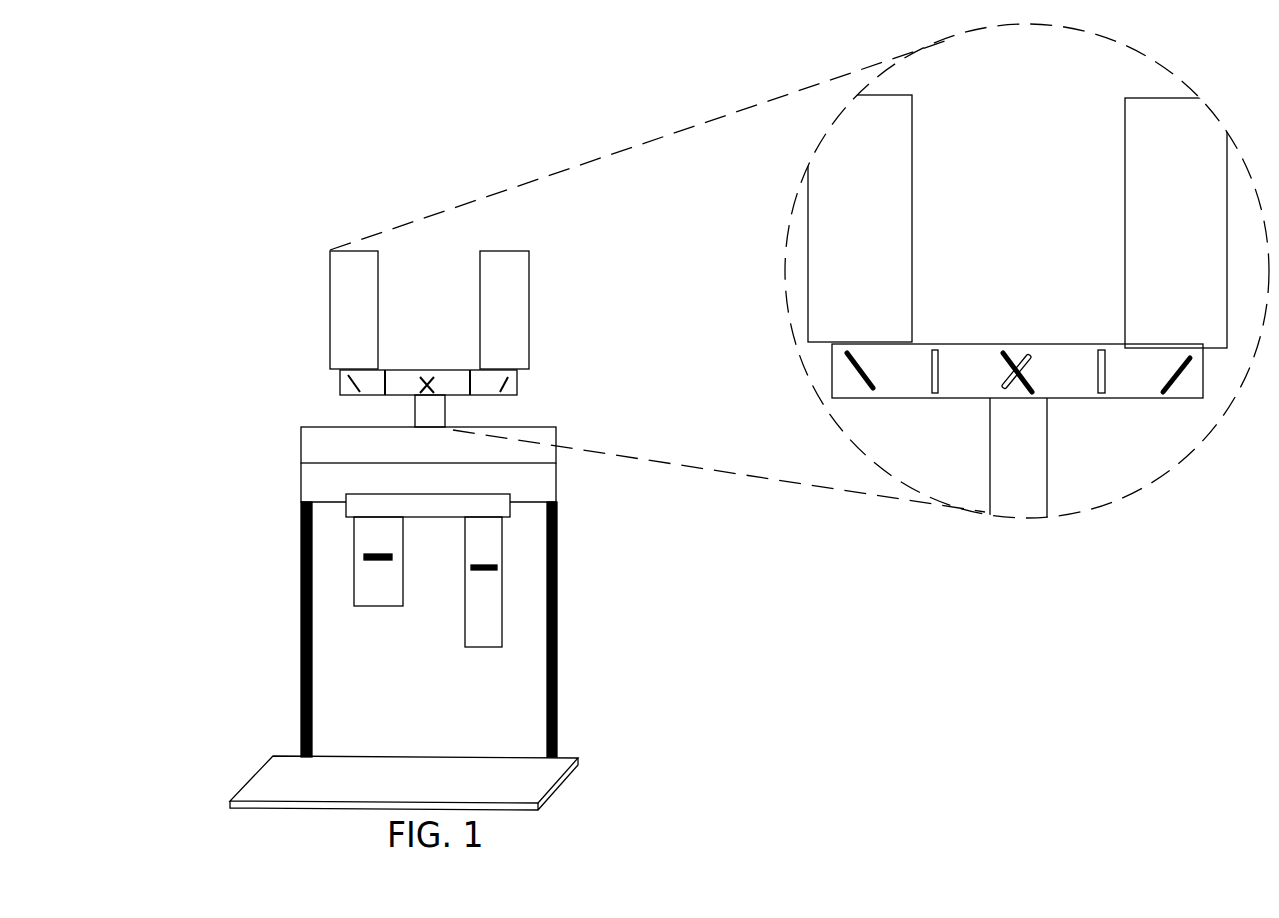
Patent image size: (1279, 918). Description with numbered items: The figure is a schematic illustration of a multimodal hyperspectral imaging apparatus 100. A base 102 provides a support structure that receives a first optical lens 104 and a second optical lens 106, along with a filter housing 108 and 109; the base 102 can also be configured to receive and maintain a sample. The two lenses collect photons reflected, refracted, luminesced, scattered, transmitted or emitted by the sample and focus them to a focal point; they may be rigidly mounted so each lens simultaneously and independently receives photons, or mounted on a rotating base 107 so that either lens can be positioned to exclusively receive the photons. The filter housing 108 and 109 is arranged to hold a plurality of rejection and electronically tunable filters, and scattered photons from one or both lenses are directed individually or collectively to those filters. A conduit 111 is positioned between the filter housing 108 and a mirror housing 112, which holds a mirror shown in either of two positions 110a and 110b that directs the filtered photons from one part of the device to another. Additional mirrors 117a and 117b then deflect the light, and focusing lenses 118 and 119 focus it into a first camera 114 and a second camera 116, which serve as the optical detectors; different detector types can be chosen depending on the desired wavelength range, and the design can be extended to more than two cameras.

The hyperspectral imaging apparatus 100 is at (637, 242).
The base 102 is at (574, 792).
The first optical lens 104 is at (352, 578).
The second optical lens 106 is at (504, 566).
The rotating base 107 is at (344, 503).
The filter housing 108 is at (558, 492).
The filter housing 109 is at (558, 438).
The conduit 111 is at (414, 411).
The mirror housing 112 is at (519, 385).
The first camera 114 is at (327, 300).
The second camera 116 is at (532, 302).
The additional mirror 117a is at (877, 402).
The additional mirror 117b is at (1153, 402).
The focusing lens 118 is at (934, 342).
The focusing lens 119 is at (1102, 342).
The mirror position 110a is at (997, 342).
The mirror position 110b is at (1047, 342).